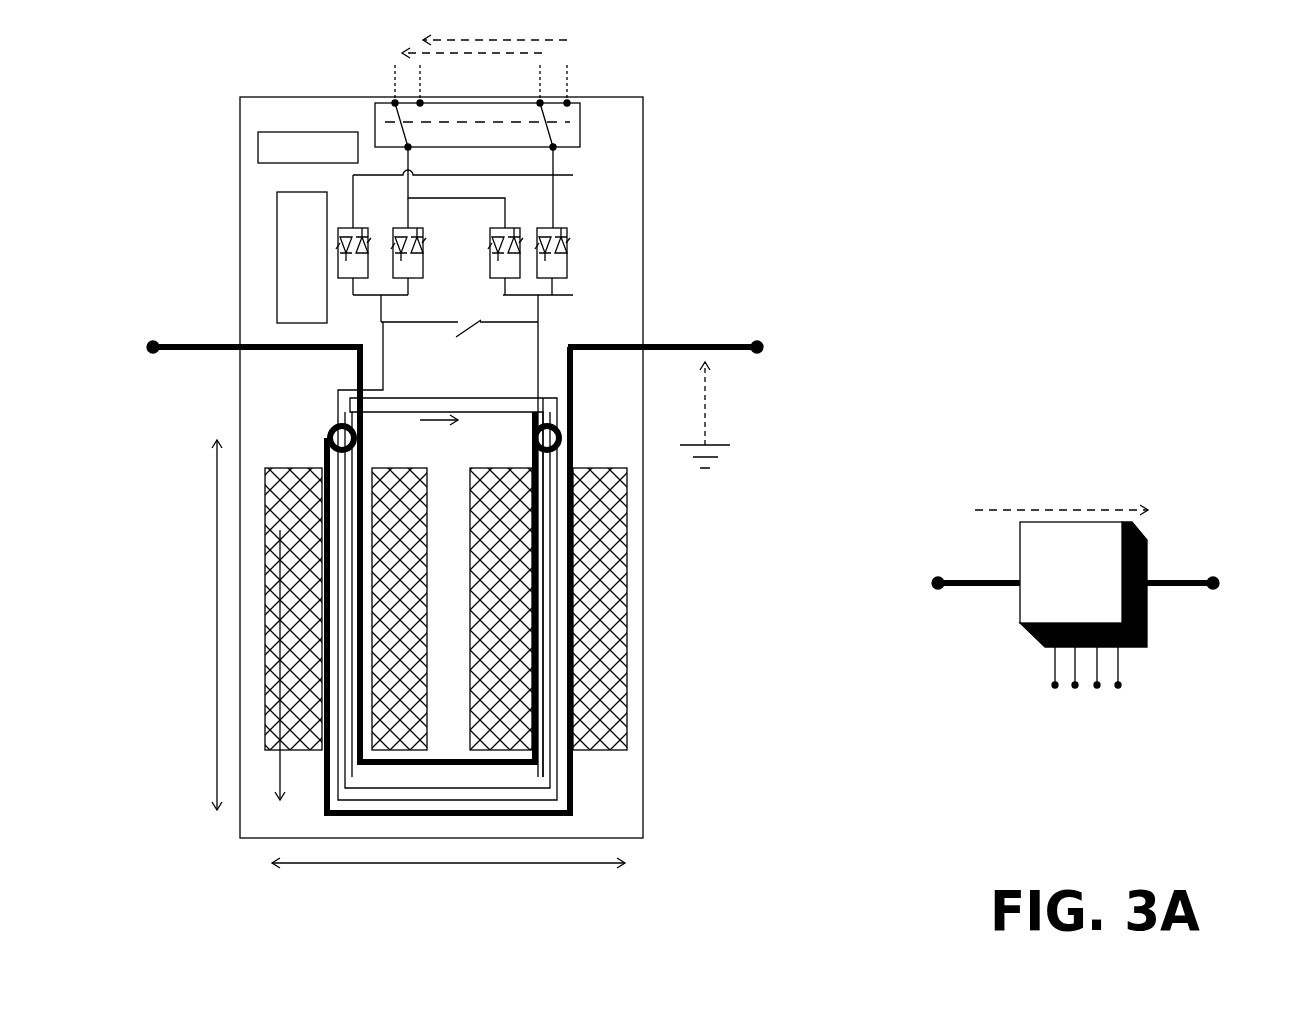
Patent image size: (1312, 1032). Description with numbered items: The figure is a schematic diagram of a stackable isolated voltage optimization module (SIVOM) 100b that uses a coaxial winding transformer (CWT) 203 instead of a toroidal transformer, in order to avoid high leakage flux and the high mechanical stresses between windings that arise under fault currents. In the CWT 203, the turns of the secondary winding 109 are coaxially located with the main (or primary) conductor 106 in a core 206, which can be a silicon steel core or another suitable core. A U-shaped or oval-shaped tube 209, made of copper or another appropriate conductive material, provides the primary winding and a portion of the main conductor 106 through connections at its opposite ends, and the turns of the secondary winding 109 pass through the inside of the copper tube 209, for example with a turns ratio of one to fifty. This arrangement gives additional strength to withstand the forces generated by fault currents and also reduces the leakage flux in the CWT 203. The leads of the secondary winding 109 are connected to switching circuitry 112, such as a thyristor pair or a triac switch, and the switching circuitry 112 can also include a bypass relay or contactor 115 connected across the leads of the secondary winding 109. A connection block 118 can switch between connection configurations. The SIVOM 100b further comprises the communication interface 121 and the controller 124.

The main conductor 106 is at (197, 342).
The secondary winding 109 is at (627, 540).
The switching circuitry 112 is at (622, 270).
The bypass relay (or contactor) 115 is at (490, 331).
The connection block 118 is at (578, 120).
The communication interface 121 is at (278, 242).
The controller 124 is at (280, 128).
The stackable isolated voltage optimization module (SIVOM) 100b is at (970, 605).
The coaxial winding transformer (CWT) 203 is at (554, 619).
The core 206 is at (627, 637).
The U-shaped or oval-shaped tube 209 is at (627, 742).